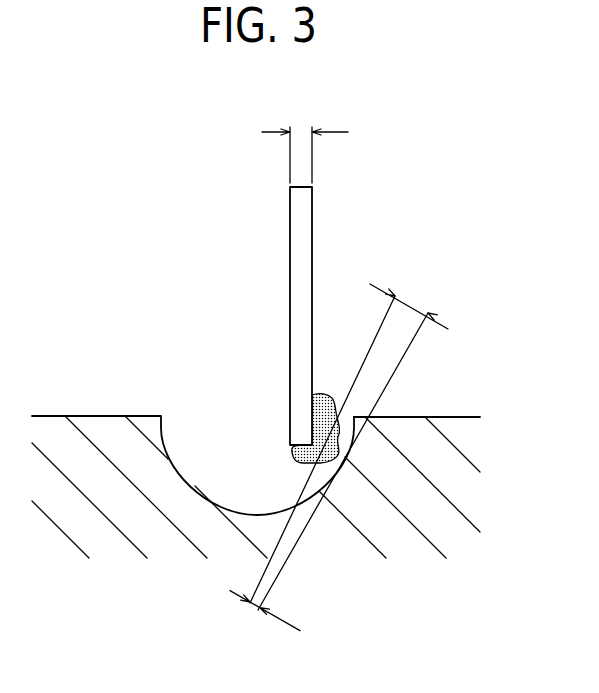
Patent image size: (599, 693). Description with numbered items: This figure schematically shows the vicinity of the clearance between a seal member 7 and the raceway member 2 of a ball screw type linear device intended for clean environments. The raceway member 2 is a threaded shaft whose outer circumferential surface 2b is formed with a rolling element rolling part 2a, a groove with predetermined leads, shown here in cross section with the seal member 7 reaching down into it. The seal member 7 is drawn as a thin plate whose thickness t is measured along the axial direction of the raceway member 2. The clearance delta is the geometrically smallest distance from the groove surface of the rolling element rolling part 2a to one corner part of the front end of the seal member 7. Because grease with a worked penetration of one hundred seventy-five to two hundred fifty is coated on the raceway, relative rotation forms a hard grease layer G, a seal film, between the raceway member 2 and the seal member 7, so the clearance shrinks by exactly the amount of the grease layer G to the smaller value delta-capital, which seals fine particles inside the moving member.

The raceway member 2 is at (285, 459).
The rolling element rolling part 2a is at (195, 487).
The outer circumferential surface 2b is at (399, 417).
The seal member 7 is at (300, 262).
The grease layer G is at (331, 397).
The thickness t is at (305, 147).